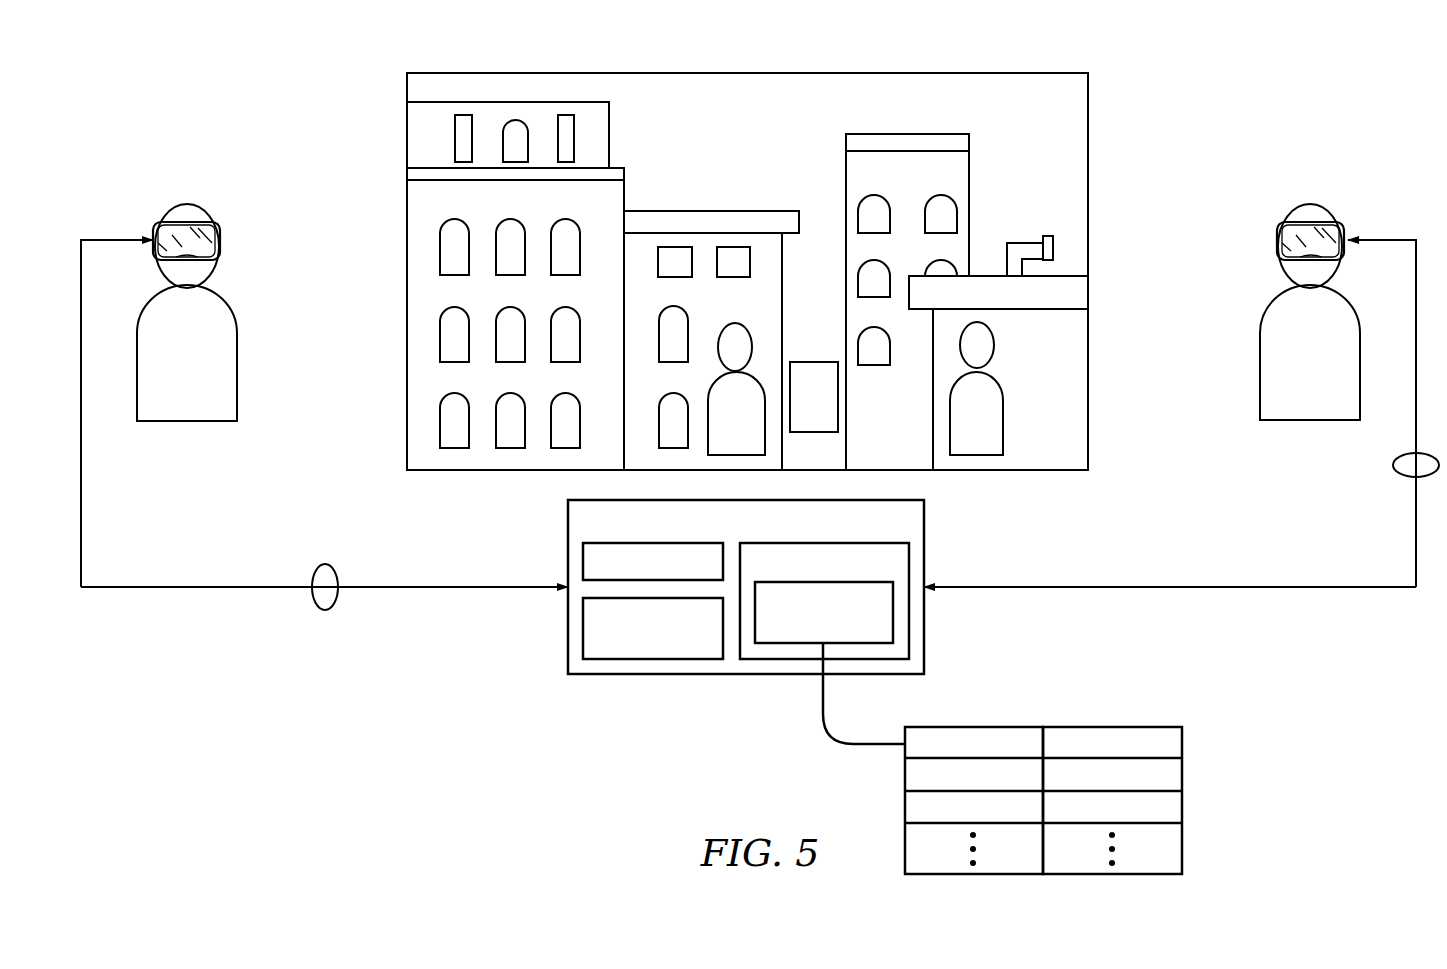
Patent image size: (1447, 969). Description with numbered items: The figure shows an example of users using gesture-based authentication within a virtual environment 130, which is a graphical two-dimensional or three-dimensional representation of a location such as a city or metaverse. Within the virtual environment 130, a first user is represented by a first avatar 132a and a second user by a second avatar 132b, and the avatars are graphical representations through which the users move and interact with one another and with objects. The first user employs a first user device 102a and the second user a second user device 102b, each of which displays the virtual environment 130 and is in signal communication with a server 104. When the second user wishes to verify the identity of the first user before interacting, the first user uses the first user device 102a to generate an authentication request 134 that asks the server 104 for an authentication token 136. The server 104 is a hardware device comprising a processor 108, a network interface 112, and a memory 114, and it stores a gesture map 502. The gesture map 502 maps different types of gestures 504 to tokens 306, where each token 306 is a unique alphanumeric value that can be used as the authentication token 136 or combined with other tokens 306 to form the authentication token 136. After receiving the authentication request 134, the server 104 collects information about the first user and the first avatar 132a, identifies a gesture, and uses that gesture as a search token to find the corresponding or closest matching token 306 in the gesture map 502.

The virtual environment 130 is at (783, 271).
The first user's avatar 132a is at (706, 375).
The second user's avatar 132b is at (1001, 374).
The authentication token 136 is at (1391, 462).
The first user's user device 102a is at (221, 246).
The second user's user device 102b is at (1276, 246).
The authentication request 134 is at (331, 608).
The server 104 is at (746, 587).
The processor 108 is at (653, 561).
The network interface 112 is at (653, 628).
The memory 114 is at (824, 601).
The gesture map 502 is at (824, 612).
The gestures 504 is at (993, 727).
The token 306 is at (1113, 727).